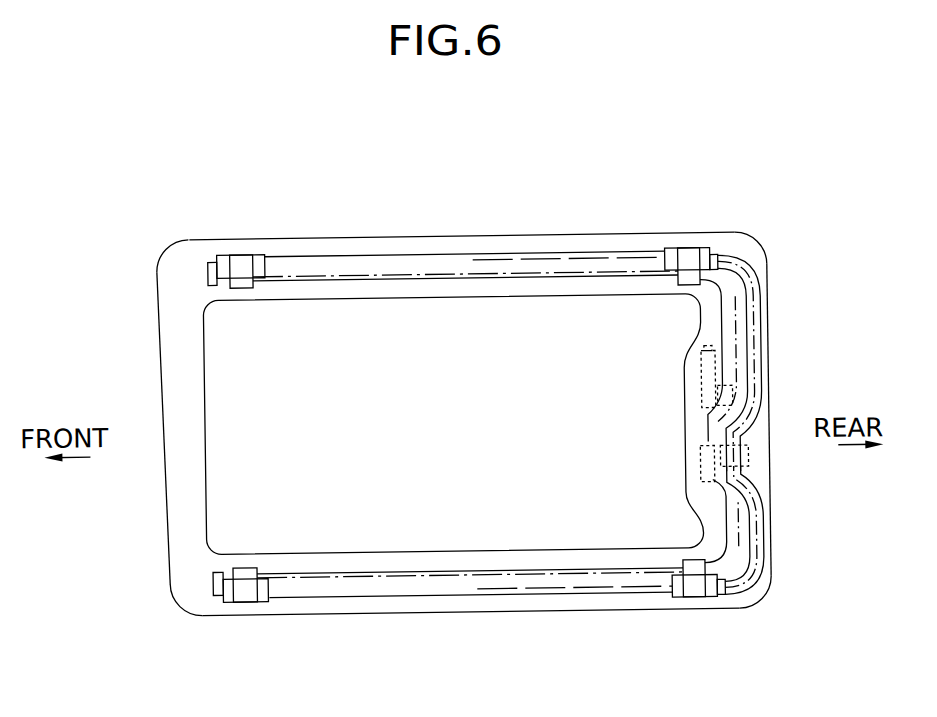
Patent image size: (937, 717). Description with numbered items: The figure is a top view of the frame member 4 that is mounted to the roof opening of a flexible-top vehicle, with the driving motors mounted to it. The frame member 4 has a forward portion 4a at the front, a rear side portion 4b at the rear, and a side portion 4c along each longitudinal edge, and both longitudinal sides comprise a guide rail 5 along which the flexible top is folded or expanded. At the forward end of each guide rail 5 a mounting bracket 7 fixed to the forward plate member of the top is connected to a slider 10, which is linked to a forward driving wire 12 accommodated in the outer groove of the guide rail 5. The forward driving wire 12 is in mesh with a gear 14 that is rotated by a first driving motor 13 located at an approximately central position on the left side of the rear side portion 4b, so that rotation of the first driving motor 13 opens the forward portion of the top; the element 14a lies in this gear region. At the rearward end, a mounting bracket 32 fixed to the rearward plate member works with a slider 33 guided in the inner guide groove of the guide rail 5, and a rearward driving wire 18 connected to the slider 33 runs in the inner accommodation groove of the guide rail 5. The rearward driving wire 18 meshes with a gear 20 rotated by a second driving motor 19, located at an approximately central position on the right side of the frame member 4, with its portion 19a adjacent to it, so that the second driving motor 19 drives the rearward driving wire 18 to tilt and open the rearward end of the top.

The frame member 4 is at (163, 559).
The forward portion of the frame member 4a is at (158, 394).
The rear side portion of the frame member 4b is at (770, 507).
The side portion of the frame member 4c is at (523, 247).
The guide rail 5 is at (445, 254).
The mounting bracket 7 is at (240, 259).
The slider 10 is at (260, 254).
The forward driving wire 12 is at (341, 279).
The first driving motor 13 is at (744, 509).
The gear 14 is at (747, 451).
The connector portion 14a is at (704, 468).
The rearward driving wire 18 is at (736, 268).
The second driving motor 19 is at (701, 373).
The motor output portion 19a is at (748, 394).
The gear 20 is at (720, 404).
The mounting bracket 32 is at (690, 255).
The slider 33 is at (674, 254).